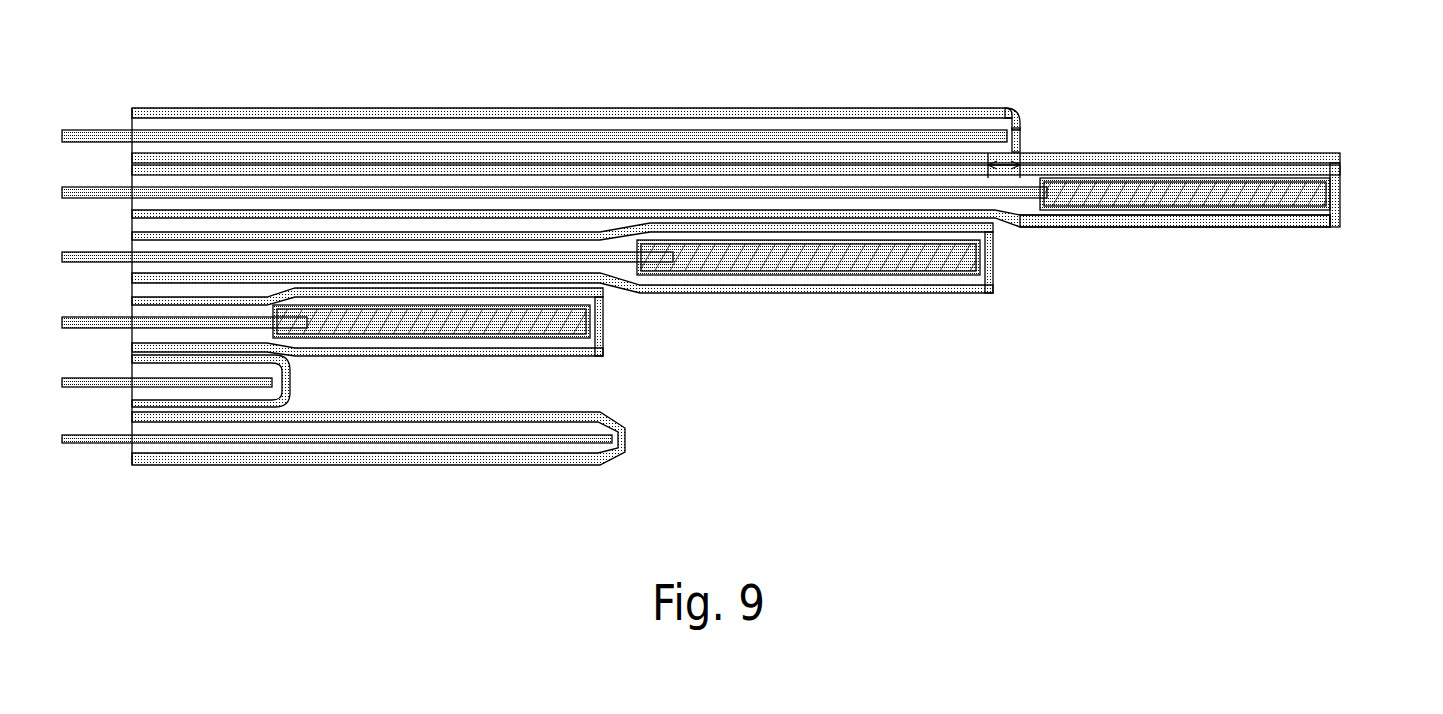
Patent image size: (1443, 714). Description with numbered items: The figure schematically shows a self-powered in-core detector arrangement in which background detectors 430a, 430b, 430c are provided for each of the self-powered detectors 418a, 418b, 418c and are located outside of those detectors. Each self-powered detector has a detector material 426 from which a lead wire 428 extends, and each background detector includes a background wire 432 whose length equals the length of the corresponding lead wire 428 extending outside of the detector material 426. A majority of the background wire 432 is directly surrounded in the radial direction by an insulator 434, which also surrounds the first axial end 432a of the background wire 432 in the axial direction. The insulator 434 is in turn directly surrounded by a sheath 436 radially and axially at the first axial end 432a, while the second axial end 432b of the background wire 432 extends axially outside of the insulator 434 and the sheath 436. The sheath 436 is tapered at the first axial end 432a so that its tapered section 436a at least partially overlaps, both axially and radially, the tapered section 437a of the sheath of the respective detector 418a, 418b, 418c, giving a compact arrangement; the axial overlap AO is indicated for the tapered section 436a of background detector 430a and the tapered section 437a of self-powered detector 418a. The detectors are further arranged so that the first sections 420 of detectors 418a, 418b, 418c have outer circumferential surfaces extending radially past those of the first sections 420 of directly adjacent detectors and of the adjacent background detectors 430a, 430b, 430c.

The self-powered detector 418a is at (1224, 210).
The self-powered detector 418b is at (1033, 264).
The self-powered detector 418c is at (646, 332).
The first section 420 is at (1216, 249).
The detector material 426 is at (1222, 185).
The lead wire 428 is at (555, 193).
The background detector 430a is at (1072, 130).
The background detector 430b is at (661, 478).
The background detector 430c is at (326, 380).
The background wire 432 is at (463, 137).
The first axial end 432a is at (1028, 75).
The second axial end 432b is at (128, 82).
The insulator 434 is at (263, 122).
The sheath 436 is at (360, 110).
The tapered section 436a is at (1005, 110).
The tapered section 437a is at (1010, 215).
The axial overlap AO is at (1018, 140).